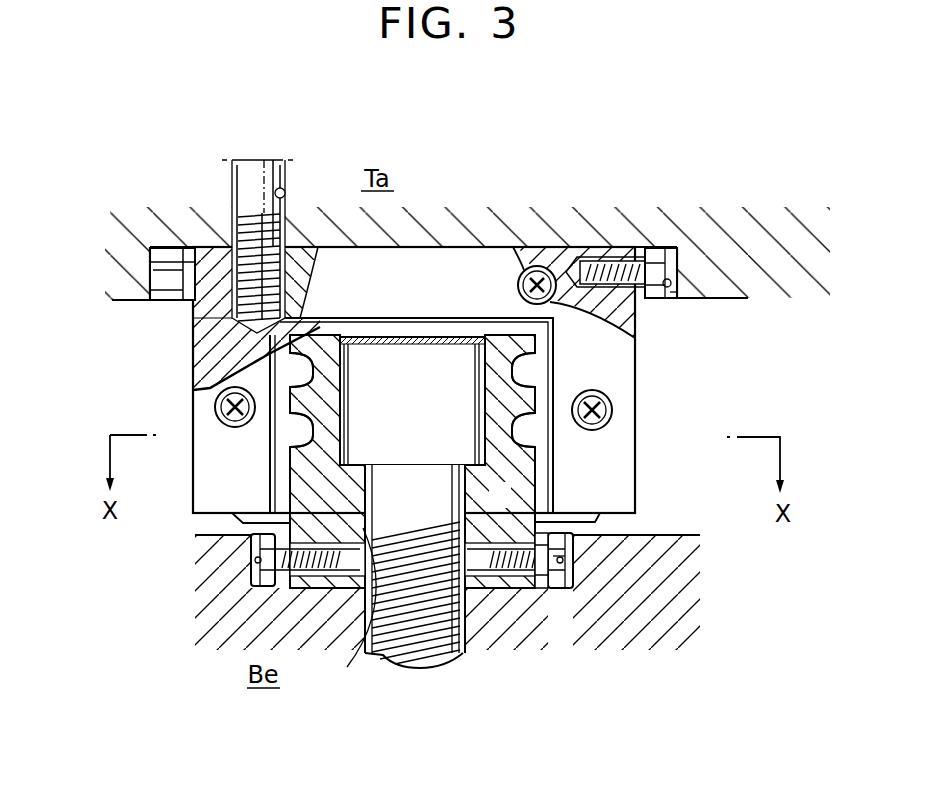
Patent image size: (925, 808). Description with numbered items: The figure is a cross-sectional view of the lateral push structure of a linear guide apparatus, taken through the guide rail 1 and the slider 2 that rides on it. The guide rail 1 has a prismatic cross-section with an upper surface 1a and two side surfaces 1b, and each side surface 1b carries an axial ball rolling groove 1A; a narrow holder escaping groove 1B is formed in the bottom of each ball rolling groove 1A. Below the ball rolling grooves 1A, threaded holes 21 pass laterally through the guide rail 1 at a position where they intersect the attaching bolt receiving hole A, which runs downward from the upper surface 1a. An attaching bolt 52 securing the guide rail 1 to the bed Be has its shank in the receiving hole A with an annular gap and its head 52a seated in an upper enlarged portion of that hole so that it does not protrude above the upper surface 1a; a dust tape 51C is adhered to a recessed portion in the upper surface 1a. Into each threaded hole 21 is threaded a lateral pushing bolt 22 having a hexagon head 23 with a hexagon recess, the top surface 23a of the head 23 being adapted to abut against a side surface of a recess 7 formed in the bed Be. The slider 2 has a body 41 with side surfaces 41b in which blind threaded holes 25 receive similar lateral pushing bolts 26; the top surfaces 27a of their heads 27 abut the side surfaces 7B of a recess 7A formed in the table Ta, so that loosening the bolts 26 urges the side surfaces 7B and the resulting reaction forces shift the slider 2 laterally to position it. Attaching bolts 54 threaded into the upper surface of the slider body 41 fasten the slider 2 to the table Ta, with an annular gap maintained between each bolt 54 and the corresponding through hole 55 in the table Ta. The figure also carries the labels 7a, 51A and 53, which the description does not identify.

The guide rail 1 is at (507, 505).
The ball rolling grooves 1A is at (290, 386).
The holder escaping groove 1B is at (536, 385).
The upper surface 1a is at (555, 333).
The side surfaces 1b is at (290, 447).
The slider 2 is at (637, 473).
The recess 7 is at (527, 583).
The recess 7A is at (447, 250).
The side surfaces 7B is at (150, 289).
The base foot 7a is at (252, 565).
The threaded holes 21 is at (503, 567).
The lateral pushing bolt 22 is at (280, 582).
The hexagon head 23 is at (553, 583).
The top surface 23a is at (570, 562).
The threaded holes 25 is at (587, 257).
The lateral pushing bolt 26 is at (150, 266).
The heads 27 is at (667, 250).
The top surfaces 27a is at (677, 268).
The body 41 is at (203, 363).
The side surfaces 41b is at (202, 318).
The nut body 51A is at (404, 441).
The dust tape 51C is at (460, 340).
The attaching bolt 52 is at (403, 633).
The head 52a is at (396, 404).
The cross-head screw 53 is at (238, 269).
The attaching bolts 54 is at (258, 168).
The through hole 55 is at (283, 189).